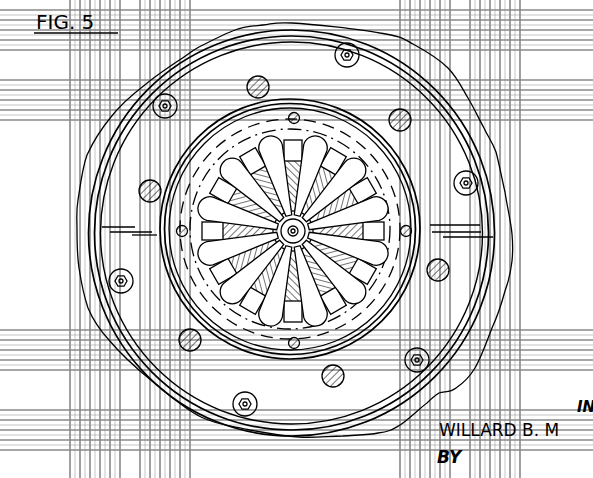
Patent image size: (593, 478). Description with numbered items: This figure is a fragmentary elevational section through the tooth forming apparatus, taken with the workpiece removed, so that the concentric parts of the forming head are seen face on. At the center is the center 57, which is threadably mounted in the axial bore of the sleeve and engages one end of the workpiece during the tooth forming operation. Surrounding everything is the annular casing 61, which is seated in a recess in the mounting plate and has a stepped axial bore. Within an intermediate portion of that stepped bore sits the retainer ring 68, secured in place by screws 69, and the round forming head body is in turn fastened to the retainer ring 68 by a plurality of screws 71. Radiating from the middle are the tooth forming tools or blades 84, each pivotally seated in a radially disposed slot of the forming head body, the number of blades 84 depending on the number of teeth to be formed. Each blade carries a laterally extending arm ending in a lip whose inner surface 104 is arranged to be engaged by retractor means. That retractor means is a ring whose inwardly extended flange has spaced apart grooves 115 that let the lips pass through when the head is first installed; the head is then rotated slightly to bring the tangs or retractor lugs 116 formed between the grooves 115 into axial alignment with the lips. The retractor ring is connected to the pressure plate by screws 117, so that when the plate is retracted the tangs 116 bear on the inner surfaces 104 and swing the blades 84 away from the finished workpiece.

The center 57 is at (272, 242).
The annular casing 61 is at (488, 317).
The retainer ring 68 is at (473, 263).
The screws 69 is at (153, 107).
The screws 71 is at (150, 180).
The tooth forming tool or blade 84 is at (352, 220).
The inner surface of the lip 104 is at (271, 273).
The grooves 115 is at (360, 168).
The tangs or retractor lugs 116 is at (308, 153).
The screws 117 is at (294, 112).